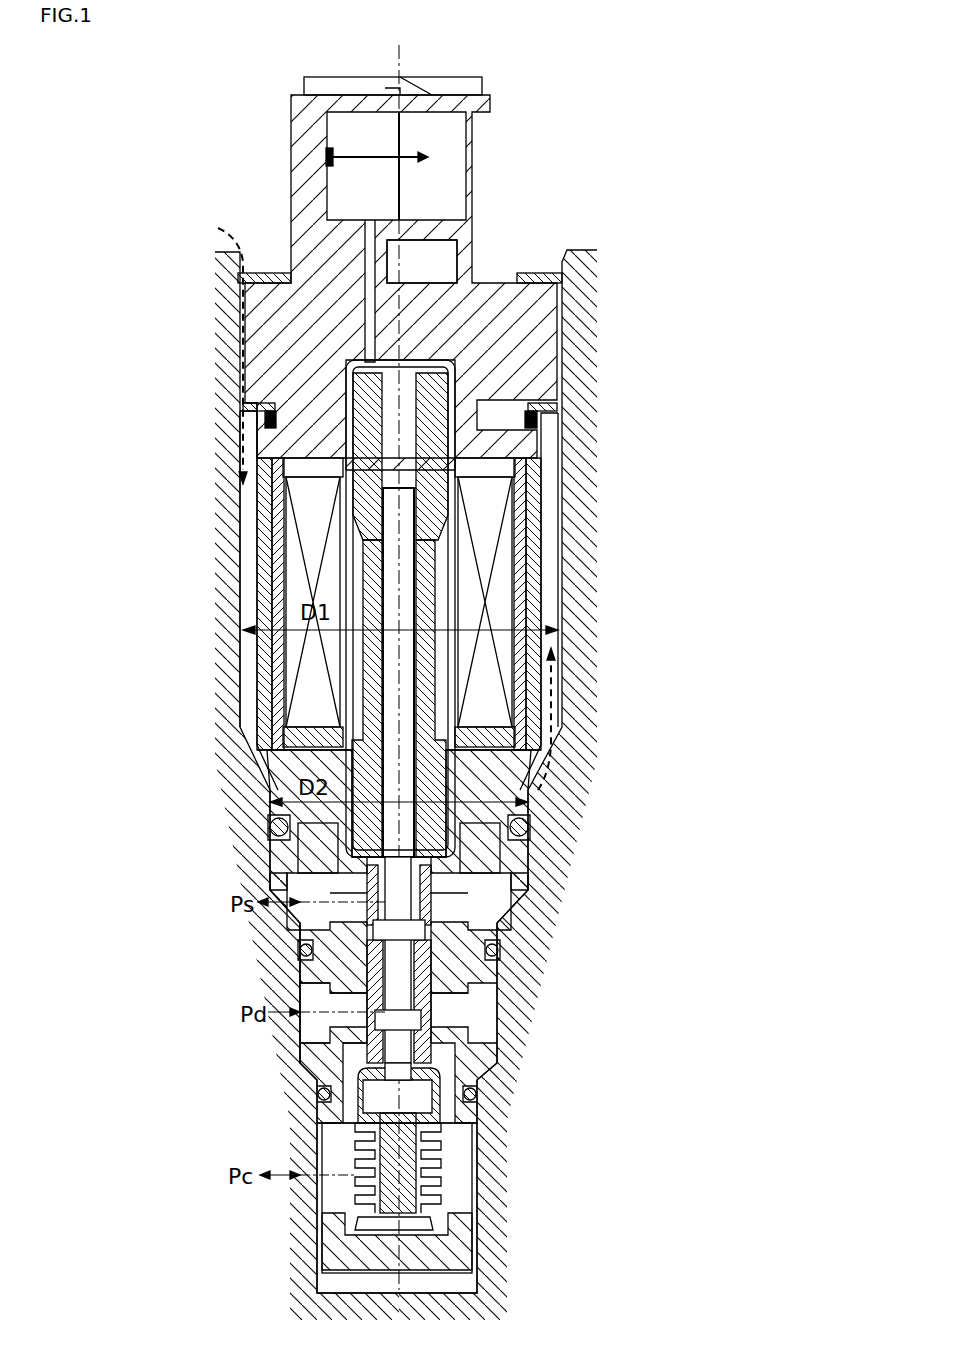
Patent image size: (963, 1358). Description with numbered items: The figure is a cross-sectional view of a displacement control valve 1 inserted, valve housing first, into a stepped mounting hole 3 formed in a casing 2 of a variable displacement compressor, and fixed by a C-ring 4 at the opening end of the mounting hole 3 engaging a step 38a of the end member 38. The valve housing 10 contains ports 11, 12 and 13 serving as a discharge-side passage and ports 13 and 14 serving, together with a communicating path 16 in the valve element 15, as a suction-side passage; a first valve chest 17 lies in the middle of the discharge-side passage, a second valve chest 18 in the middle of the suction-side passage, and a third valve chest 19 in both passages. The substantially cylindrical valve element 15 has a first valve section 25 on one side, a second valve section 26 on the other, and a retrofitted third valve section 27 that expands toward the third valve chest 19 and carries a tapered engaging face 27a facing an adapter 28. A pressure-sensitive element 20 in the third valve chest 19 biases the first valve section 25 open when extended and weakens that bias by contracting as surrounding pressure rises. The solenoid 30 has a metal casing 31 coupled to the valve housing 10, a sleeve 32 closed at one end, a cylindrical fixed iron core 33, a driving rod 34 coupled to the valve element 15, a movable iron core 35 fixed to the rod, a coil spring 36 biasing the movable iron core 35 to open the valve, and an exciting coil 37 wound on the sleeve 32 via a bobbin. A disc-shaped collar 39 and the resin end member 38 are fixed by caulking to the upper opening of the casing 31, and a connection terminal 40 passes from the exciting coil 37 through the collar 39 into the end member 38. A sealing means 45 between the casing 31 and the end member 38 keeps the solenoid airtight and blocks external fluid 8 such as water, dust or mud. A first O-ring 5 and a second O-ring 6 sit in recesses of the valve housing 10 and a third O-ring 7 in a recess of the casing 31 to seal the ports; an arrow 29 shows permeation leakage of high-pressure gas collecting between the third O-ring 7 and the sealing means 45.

The displacement control valve 1 is at (246, 94).
The casing 2 is at (222, 252).
The mounting hole 3 is at (548, 316).
The C-ring 4 is at (262, 273).
The first O-ring 5 is at (497, 962).
The second O-ring 6 is at (478, 1094).
The third O-ring 7 is at (530, 828).
The external fluid 8 is at (255, 440).
The valve housing 10 is at (497, 937).
The port 11 is at (308, 1034).
The port 12 is at (367, 1065).
The port 13 is at (347, 1209).
The port 14 is at (320, 934).
The valve element 15 is at (305, 954).
The communicating path 16 is at (487, 1054).
The first valve chest 17 is at (312, 997).
The second valve chest 18 is at (345, 884).
The third valve chest 19 is at (350, 1158).
The pressure-sensitive element 20 is at (455, 1217).
The first valve section 25 is at (455, 1022).
The second valve section 26 is at (477, 885).
The third valve section 27 is at (440, 1074).
The tapered engaging face 27a is at (470, 1114).
The adapter 28 is at (433, 1180).
The arrow 29 is at (560, 705).
The solenoid 30 is at (240, 546).
The casing 31 is at (543, 525).
The sleeve 32 is at (447, 362).
The fixed iron core 33 is at (462, 770).
The driving rod 34 is at (407, 677).
The movable iron core 35 is at (545, 498).
The coil spring 36 is at (462, 557).
The exciting coil 37 is at (502, 592).
The end member 38 is at (483, 296).
The step 38a is at (513, 276).
The collar 39 is at (478, 406).
The connection terminal 40 is at (375, 232).
The sealing means 45 is at (245, 397).